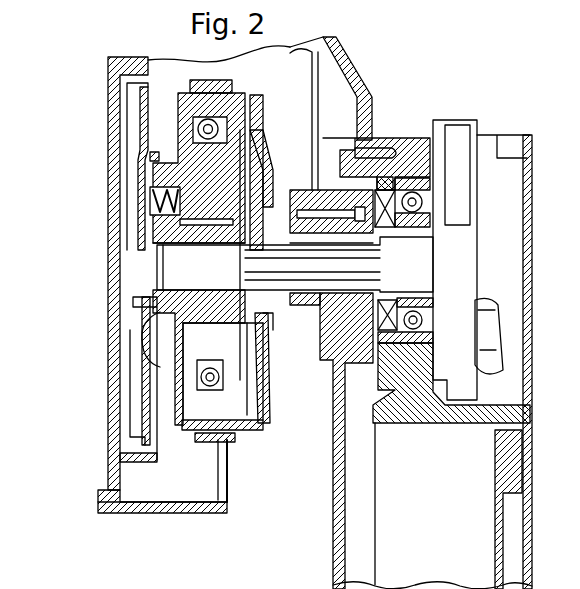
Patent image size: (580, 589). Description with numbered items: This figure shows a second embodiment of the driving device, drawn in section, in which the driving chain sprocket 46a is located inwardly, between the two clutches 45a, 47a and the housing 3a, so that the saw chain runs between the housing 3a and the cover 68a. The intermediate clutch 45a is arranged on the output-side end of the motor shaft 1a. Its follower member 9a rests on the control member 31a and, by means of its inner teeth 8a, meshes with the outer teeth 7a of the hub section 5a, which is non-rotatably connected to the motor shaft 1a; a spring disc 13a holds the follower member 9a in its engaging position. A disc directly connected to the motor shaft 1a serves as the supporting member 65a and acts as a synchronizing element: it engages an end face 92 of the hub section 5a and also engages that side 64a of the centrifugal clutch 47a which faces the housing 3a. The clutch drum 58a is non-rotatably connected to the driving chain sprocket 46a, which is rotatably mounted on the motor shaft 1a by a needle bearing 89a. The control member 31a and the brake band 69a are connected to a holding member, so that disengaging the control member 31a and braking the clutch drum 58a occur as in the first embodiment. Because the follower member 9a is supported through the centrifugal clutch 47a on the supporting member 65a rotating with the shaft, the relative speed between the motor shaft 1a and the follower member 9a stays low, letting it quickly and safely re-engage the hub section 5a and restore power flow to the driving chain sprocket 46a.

The motor shaft 1a is at (418, 261).
The housing 3a is at (350, 522).
The hub section 5a is at (167, 237).
The outer teeth 7a is at (158, 205).
The inner teeth 8a is at (157, 325).
The follower member 9a is at (150, 157).
The spring disc 13a is at (177, 360).
The control member 31a is at (147, 97).
The intermediate clutch 45a is at (120, 412).
The driving chain sprocket 46a is at (333, 143).
The centrifugal clutch 47a is at (214, 447).
The clutch drum 58a is at (245, 430).
The side of the centrifugal clutch 64a is at (262, 313).
The supporting member 65a is at (265, 383).
The cover 68a is at (100, 506).
The brake band 69a is at (200, 442).
The needle bearing 89a is at (268, 230).
The end face 92 is at (229, 242).